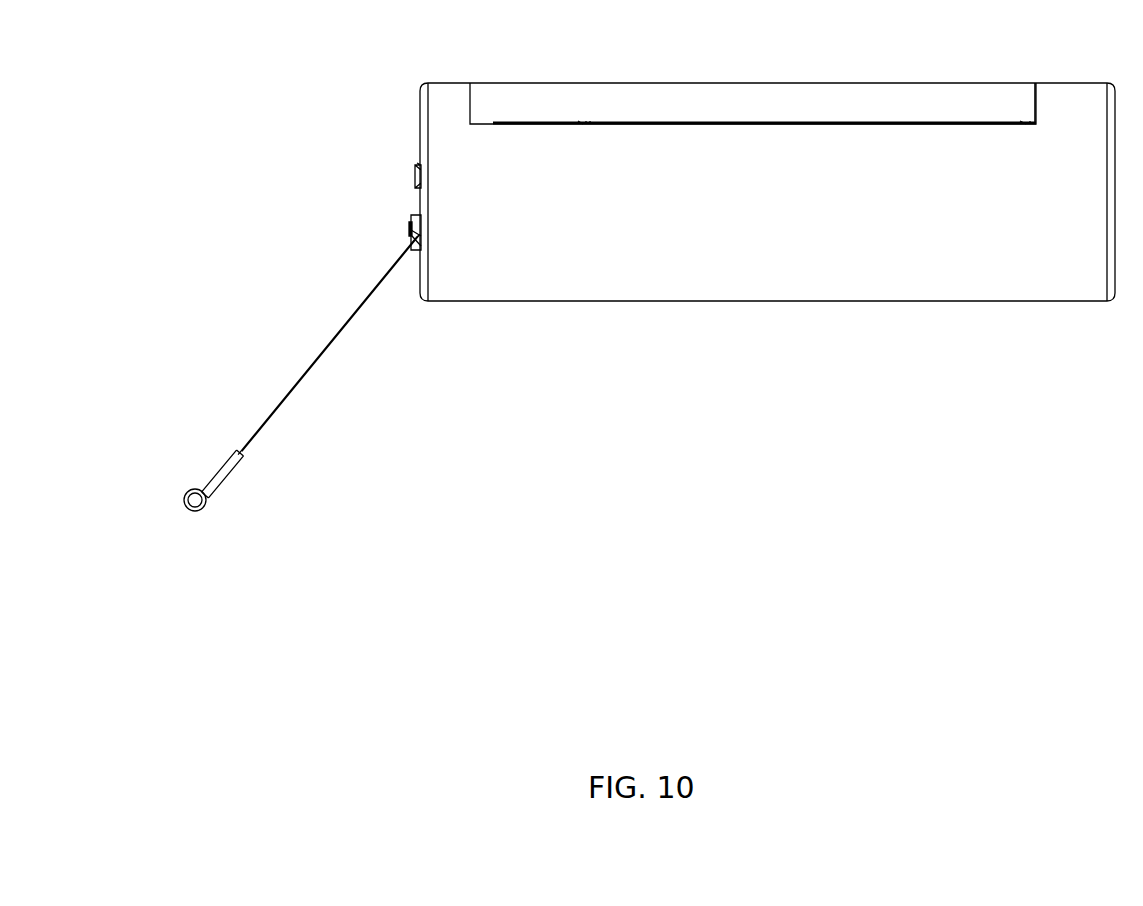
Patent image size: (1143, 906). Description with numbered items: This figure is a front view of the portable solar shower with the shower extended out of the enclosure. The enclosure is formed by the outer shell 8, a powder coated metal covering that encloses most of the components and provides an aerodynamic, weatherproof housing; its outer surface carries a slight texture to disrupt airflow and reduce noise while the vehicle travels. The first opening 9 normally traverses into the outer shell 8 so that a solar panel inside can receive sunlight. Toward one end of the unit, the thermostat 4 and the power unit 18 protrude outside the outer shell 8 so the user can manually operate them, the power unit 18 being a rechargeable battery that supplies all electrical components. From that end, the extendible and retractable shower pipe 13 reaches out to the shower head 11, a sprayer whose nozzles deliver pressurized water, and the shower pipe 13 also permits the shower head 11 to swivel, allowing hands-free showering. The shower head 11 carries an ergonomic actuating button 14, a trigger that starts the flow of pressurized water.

The thermostat 4 is at (418, 165).
The outer shell 8 is at (571, 285).
The first opening 9 is at (940, 103).
The shower head 11 is at (190, 490).
The shower pipe 13 is at (357, 308).
The actuating button 14 is at (233, 465).
The power unit 18 is at (412, 218).